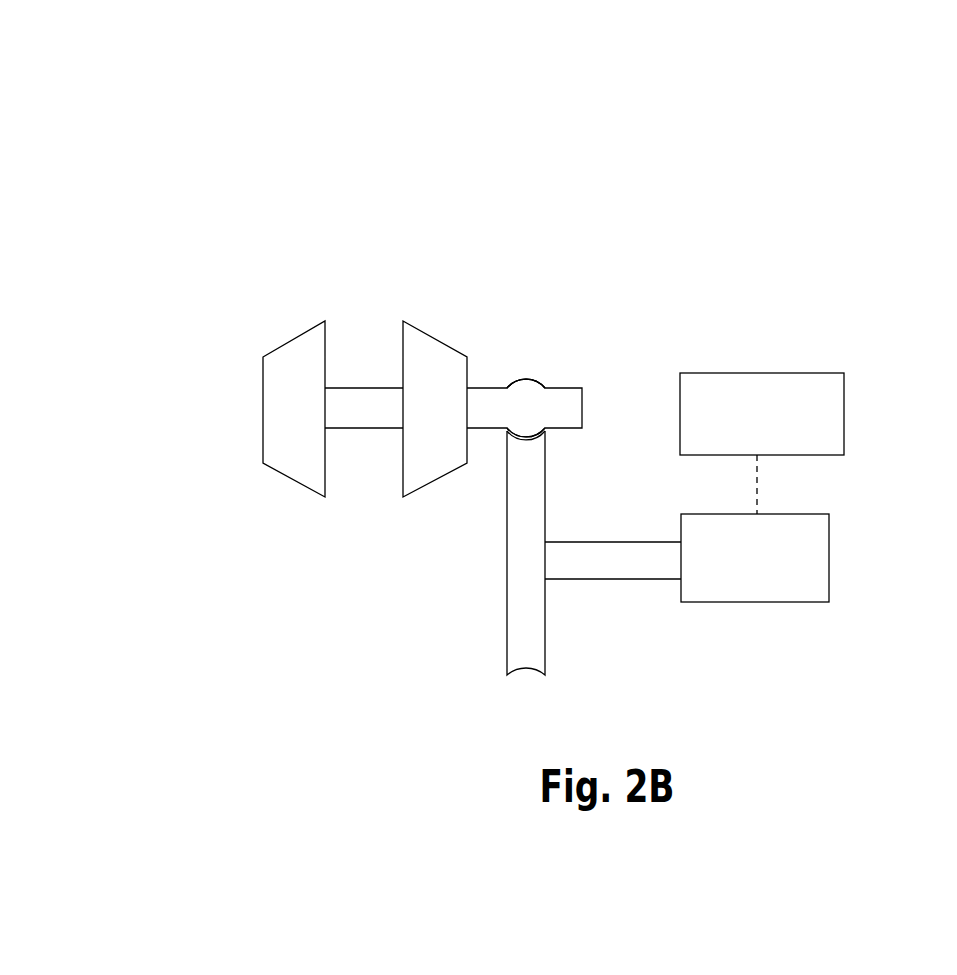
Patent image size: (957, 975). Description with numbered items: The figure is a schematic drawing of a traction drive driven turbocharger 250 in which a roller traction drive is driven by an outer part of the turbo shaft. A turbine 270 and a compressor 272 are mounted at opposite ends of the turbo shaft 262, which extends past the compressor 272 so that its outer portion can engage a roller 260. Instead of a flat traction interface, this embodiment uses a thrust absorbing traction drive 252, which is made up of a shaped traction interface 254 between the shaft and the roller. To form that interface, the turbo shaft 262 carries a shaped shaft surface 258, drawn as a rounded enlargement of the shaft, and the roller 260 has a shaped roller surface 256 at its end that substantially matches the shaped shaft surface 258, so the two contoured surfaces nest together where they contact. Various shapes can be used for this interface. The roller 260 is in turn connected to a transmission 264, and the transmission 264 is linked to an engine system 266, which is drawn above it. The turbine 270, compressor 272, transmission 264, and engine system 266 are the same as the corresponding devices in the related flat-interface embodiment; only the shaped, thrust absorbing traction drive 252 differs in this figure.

The traction drive driven turbocharger 250 is at (250, 168).
The thrust absorbing traction drive 252 is at (537, 372).
The shaped traction interface 254 is at (497, 435).
The shaped roller surface 256 is at (528, 440).
The shaped shaft surface 258 is at (526, 379).
The roller 260 is at (515, 627).
The turbo shaft 262 is at (485, 397).
The transmission 264 is at (751, 602).
The engine system 266 is at (813, 373).
The turbine 270 is at (263, 435).
The compressor 272 is at (403, 495).